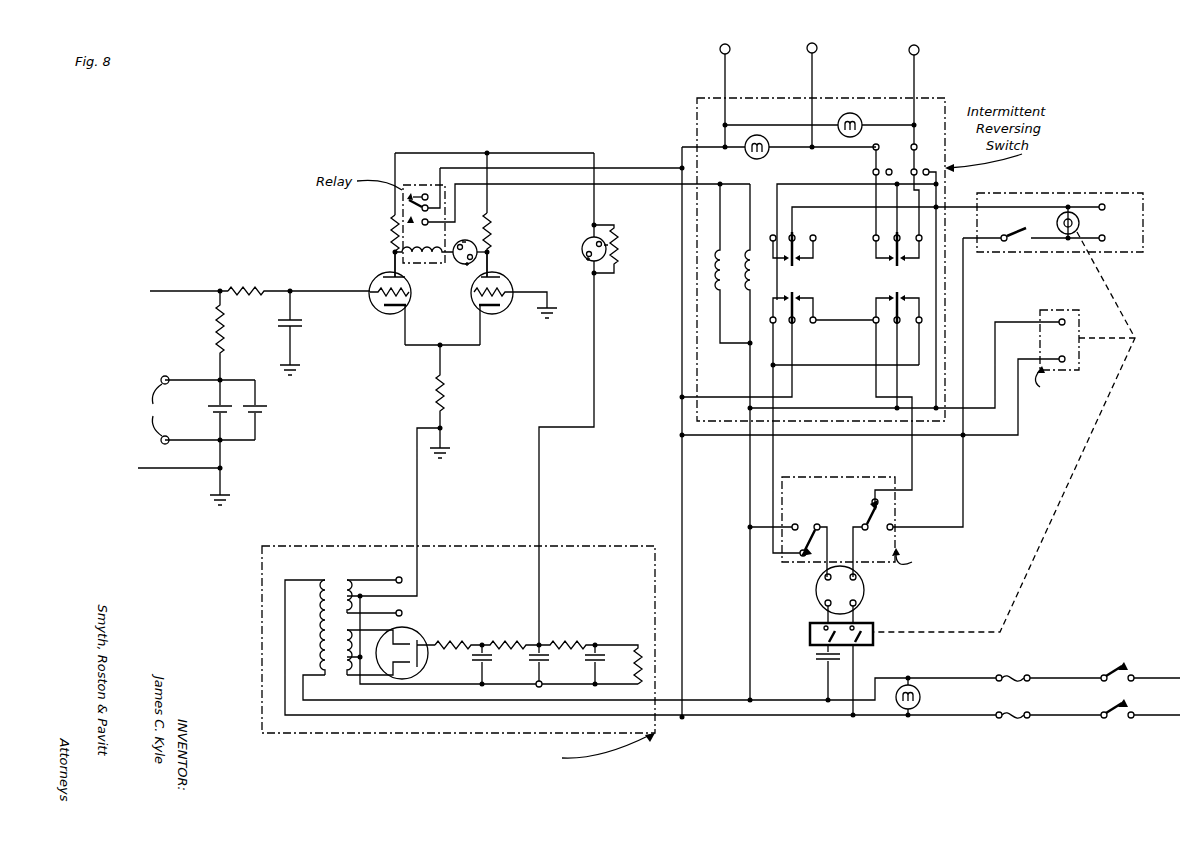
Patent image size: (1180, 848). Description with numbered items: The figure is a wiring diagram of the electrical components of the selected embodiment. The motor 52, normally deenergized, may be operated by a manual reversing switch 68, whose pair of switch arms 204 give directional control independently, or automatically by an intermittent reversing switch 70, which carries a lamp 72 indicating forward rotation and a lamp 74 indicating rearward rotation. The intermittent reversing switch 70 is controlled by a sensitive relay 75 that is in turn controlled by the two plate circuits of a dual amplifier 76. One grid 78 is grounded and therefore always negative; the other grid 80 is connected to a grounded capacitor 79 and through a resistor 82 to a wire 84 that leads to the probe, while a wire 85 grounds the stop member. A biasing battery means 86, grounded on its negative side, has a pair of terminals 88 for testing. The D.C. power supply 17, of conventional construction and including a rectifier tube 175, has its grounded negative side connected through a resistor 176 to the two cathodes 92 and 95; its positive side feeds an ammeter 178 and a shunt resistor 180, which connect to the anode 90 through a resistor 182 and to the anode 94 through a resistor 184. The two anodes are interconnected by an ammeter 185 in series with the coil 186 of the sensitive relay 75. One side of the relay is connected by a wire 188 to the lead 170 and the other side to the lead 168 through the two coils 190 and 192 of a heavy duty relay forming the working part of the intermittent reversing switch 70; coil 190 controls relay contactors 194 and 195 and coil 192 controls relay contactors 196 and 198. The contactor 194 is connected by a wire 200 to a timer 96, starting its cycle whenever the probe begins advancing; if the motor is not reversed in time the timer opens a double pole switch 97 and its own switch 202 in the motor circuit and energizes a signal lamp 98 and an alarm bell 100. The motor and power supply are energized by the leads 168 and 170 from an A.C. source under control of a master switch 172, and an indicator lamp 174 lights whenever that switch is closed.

The wire 84 is at (168, 291).
The resistor 82 is at (299, 279).
The grounded capacitor 79 is at (302, 322).
The grid 80 is at (374, 306).
The anode 90 is at (371, 290).
The cathode 92 is at (398, 320).
The biasing battery means 86 is at (208, 405).
The terminals 88 is at (153, 410).
The wire 85 is at (165, 470).
The resistor 182 is at (391, 230).
The coil 186 is at (402, 252).
The sensitive relay 75 is at (447, 225).
The ammeter 185 is at (456, 261).
The resistor 184 is at (490, 232).
The anode 94 is at (496, 274).
The grid 78 is at (473, 292).
The cathode 95 is at (482, 320).
The dual amplifier 76 is at (510, 310).
The ammeter 178 is at (584, 256).
The shunt resistor 180 is at (618, 250).
The resistor 176 is at (444, 394).
The rectifier tube 175 is at (418, 632).
The D.C. power supply 17 is at (562, 547).
The wire 188 is at (626, 168).
The intermittent reversing switch 70 is at (696, 125).
The lamp 72 is at (748, 154).
The lamp 74 is at (859, 118).
The coil 190 is at (718, 262).
The coil 192 is at (746, 282).
The relay contactor 194 is at (797, 240).
The relay contactor 195 is at (888, 256).
The relay contactor 196 is at (795, 326).
The relay contactor 198 is at (892, 306).
The wire 200 is at (953, 206).
The timer 96 is at (1038, 193).
The signal lamp 98 is at (1060, 212).
The switch 202 is at (1018, 234).
The alarm bell 100 is at (1080, 366).
The switch arms 204 is at (865, 514).
The manual reversing switch 68 is at (876, 564).
The motor 52 is at (818, 604).
The double pole switch 97 is at (862, 650).
The indicator lamp 174 is at (904, 686).
The master switch 172 is at (1112, 666).
The lead 168 is at (708, 700).
The lead 170 is at (716, 720).